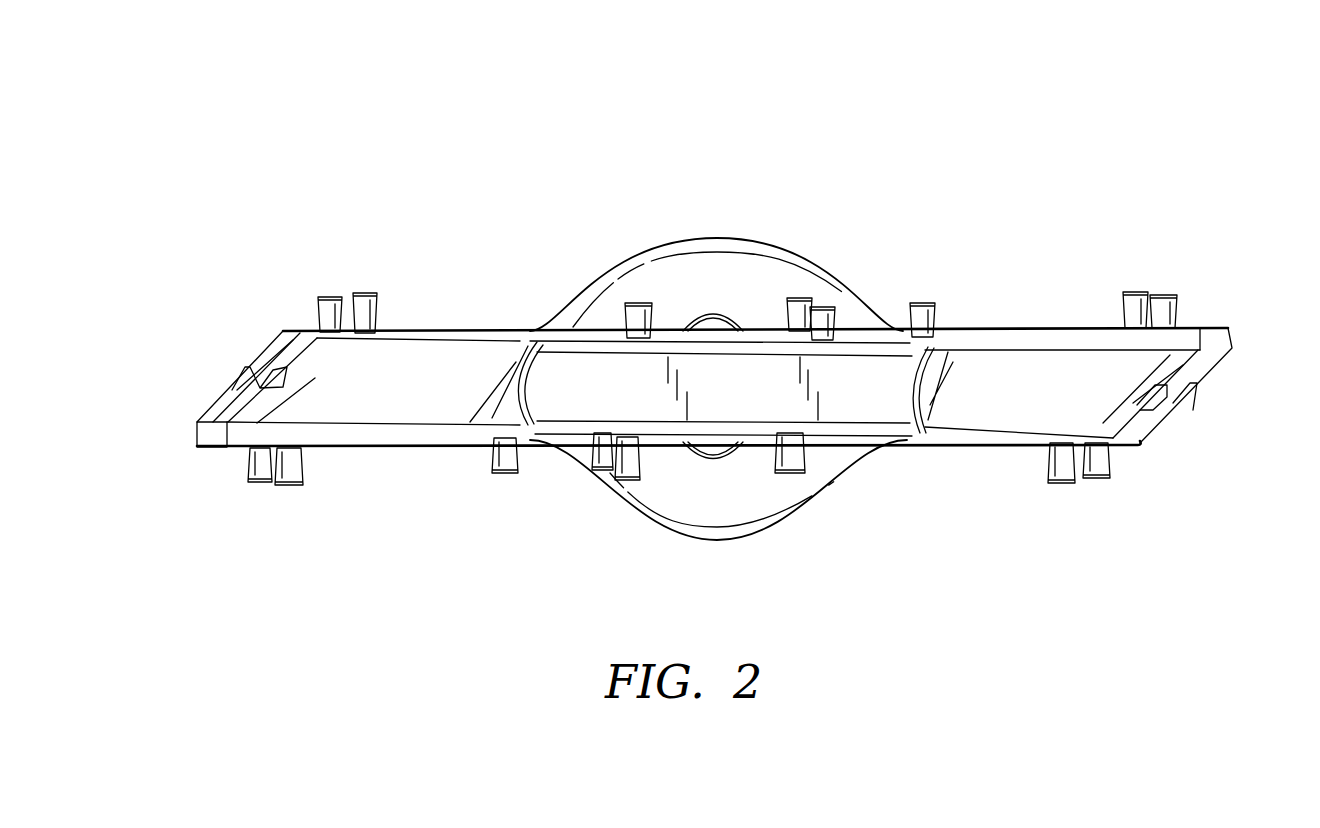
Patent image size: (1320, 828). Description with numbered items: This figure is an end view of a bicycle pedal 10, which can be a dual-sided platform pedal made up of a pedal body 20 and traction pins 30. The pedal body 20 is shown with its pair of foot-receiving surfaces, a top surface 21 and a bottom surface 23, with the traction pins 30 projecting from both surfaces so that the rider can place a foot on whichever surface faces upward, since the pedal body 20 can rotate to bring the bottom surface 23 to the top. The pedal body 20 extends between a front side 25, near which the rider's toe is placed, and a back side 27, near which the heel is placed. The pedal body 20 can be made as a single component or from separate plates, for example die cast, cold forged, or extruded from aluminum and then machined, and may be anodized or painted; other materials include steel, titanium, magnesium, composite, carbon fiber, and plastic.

The pedal 10 is at (915, 131).
The pedal body 20 is at (273, 353).
The top surface 21 is at (1002, 335).
The bottom surface 23 is at (960, 440).
The front side 25 is at (1222, 341).
The back side 27 is at (207, 437).
The traction pins 30 is at (640, 318).